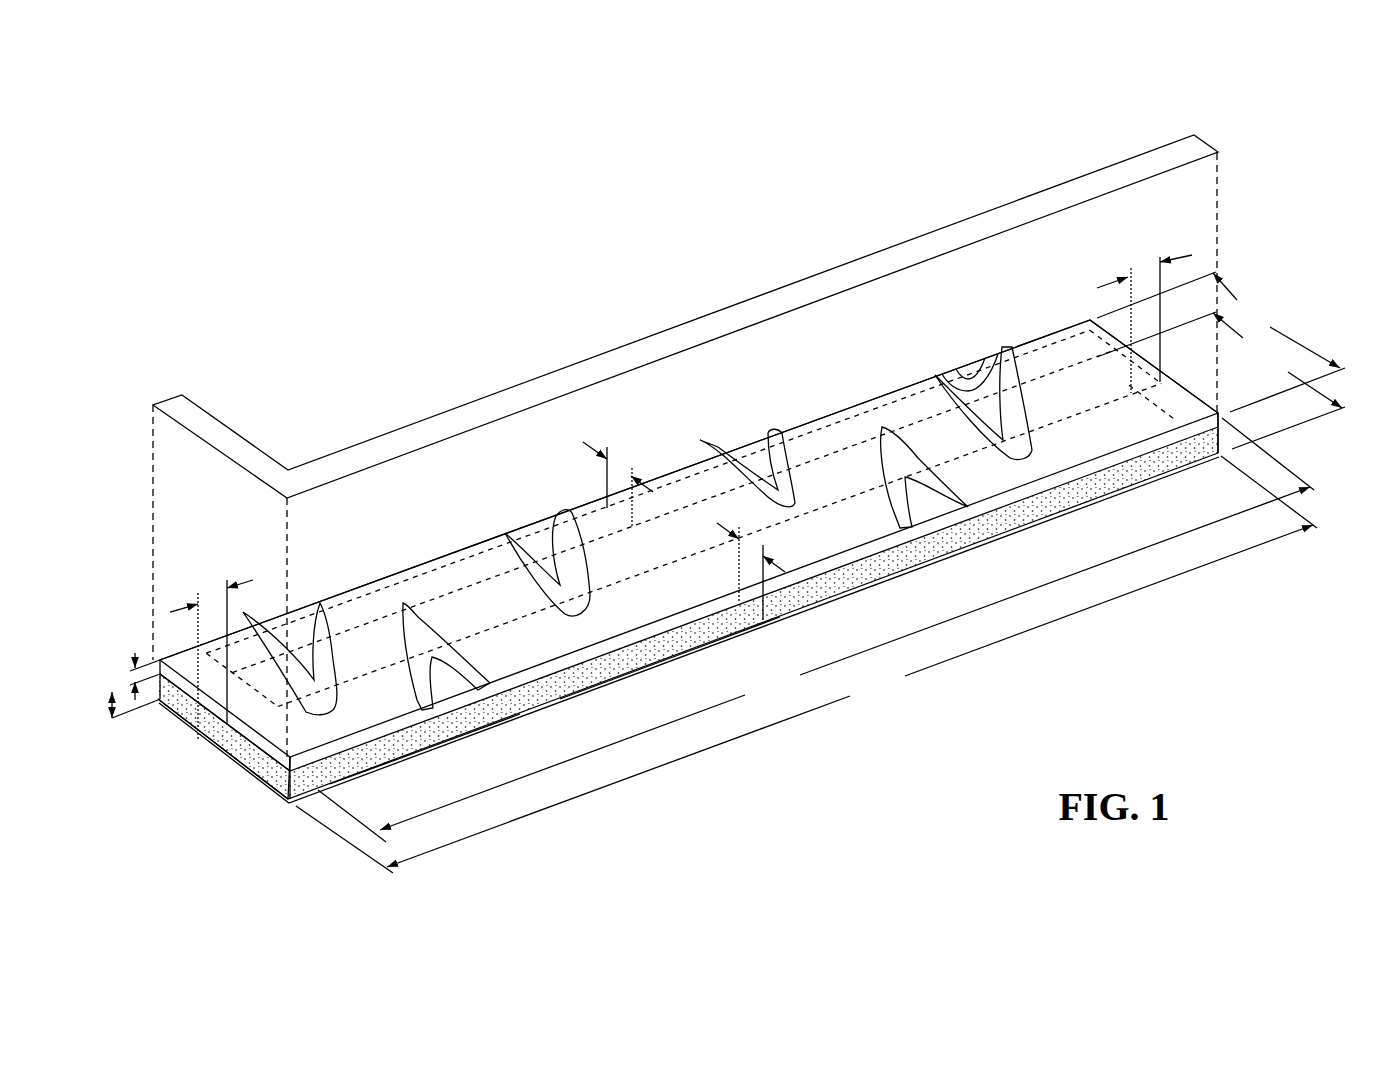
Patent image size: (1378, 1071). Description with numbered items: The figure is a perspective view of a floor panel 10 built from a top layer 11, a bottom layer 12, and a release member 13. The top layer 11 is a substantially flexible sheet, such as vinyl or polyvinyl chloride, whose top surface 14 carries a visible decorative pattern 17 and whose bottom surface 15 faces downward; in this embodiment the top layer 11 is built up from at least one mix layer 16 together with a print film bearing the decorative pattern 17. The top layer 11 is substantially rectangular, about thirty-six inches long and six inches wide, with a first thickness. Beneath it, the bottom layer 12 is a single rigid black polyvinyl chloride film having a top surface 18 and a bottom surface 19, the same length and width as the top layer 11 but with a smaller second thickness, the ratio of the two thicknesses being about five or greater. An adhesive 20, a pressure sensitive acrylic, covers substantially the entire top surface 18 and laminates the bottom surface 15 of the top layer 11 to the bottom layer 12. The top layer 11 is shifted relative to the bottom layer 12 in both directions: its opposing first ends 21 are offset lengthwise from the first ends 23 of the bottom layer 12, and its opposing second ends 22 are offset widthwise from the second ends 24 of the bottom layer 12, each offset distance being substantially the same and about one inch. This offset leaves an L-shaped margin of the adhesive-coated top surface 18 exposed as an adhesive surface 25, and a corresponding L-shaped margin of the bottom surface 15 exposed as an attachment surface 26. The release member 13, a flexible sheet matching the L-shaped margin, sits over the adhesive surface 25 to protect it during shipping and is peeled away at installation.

The floor panel 10 is at (553, 237).
The top layer 11 is at (323, 778).
The bottom layer 12 is at (237, 773).
The release member 13 is at (1163, 150).
The top surface 14 is at (318, 758).
The bottom surface 15 is at (1227, 443).
The mix layer 16 is at (1075, 477).
The visible decorative pattern 17 is at (1035, 445).
The top surface 18 is at (368, 760).
The bottom surface 19 is at (436, 739).
The adhesive 20 is at (642, 670).
The first ends 21 is at (183, 697).
The second ends 22 is at (359, 587).
The first ends 23 is at (210, 750).
The second ends 24 is at (168, 659).
The adhesive surface 25 is at (710, 653).
The attachment surface 26 is at (875, 400).